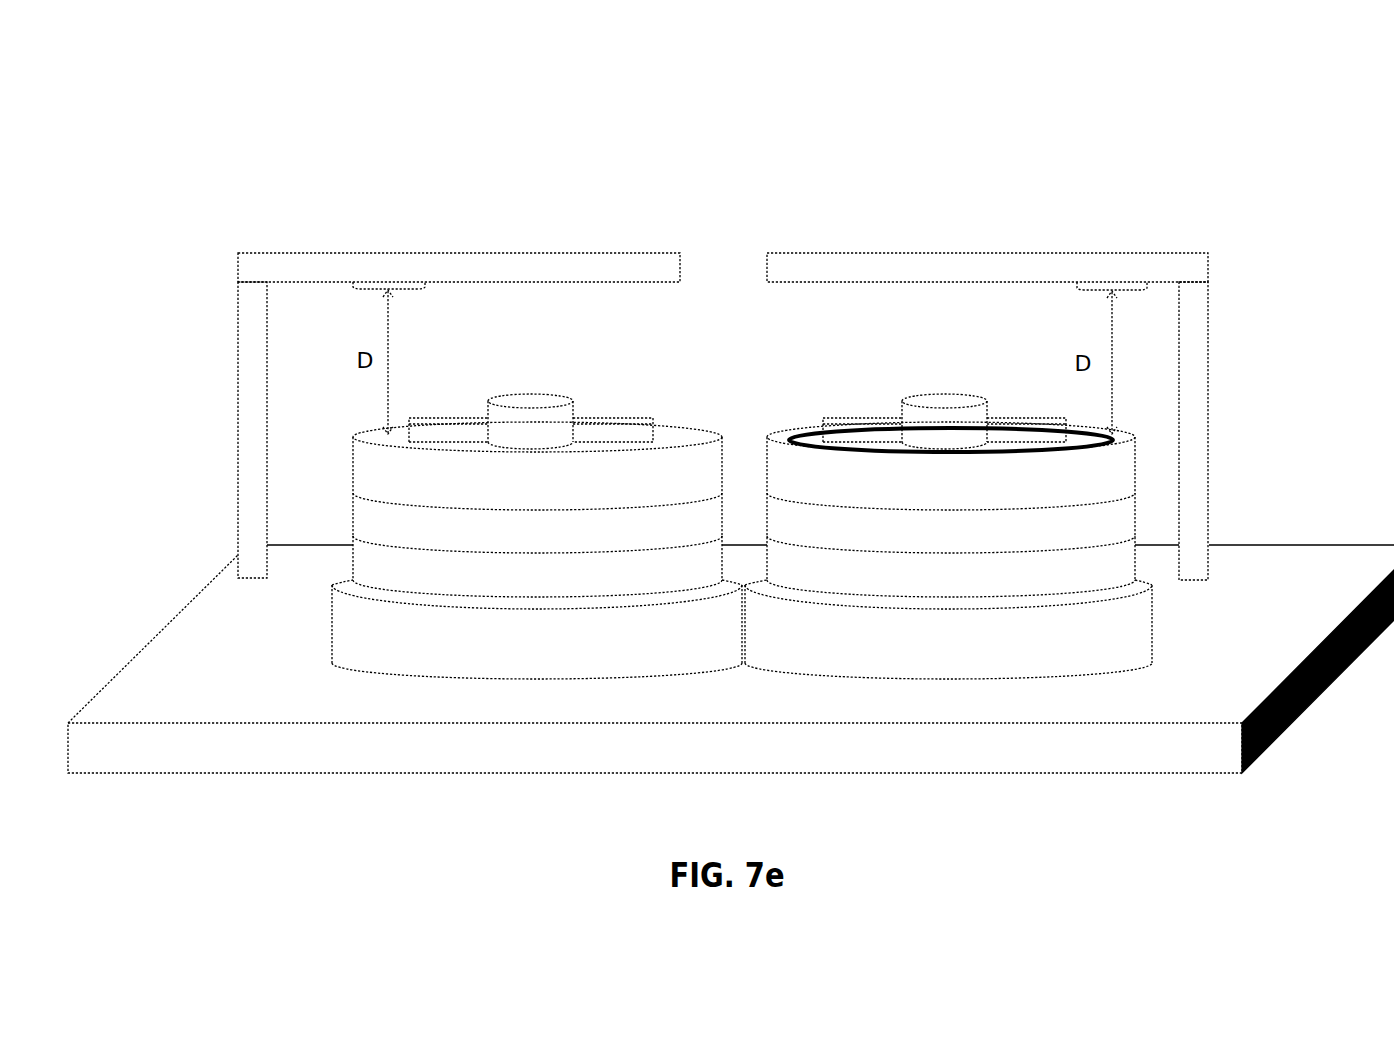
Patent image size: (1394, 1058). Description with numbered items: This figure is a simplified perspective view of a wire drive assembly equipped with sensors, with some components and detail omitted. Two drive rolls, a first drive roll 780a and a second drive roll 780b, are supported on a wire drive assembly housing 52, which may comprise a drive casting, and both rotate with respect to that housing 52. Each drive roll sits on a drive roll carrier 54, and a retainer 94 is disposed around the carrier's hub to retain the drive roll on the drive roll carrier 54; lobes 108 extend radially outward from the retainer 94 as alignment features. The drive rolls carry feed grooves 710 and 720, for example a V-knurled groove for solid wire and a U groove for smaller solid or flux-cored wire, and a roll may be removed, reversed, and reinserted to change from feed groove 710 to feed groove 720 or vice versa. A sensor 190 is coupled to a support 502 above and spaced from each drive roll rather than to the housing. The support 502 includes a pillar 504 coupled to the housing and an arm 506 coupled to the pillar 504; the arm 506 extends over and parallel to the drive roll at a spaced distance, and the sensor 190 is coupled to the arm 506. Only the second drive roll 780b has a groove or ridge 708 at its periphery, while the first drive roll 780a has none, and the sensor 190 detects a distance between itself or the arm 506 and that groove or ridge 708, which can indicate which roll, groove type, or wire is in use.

The wire drive assembly housing 52 is at (68, 748).
The drive roll carrier 54 is at (332, 620).
The retainer 94 is at (530, 402).
The lobes 108 is at (610, 418).
The sensor 190 is at (348, 271).
The support 502 is at (756, 347).
The pillar 504 is at (1193, 417).
The arm 506 is at (987, 253).
The groove/ridge 708 is at (790, 436).
The feed groove 710 is at (350, 490).
The feed groove 720 is at (346, 531).
The first drive roll 780a is at (350, 461).
The second drive roll 780b is at (1140, 460).